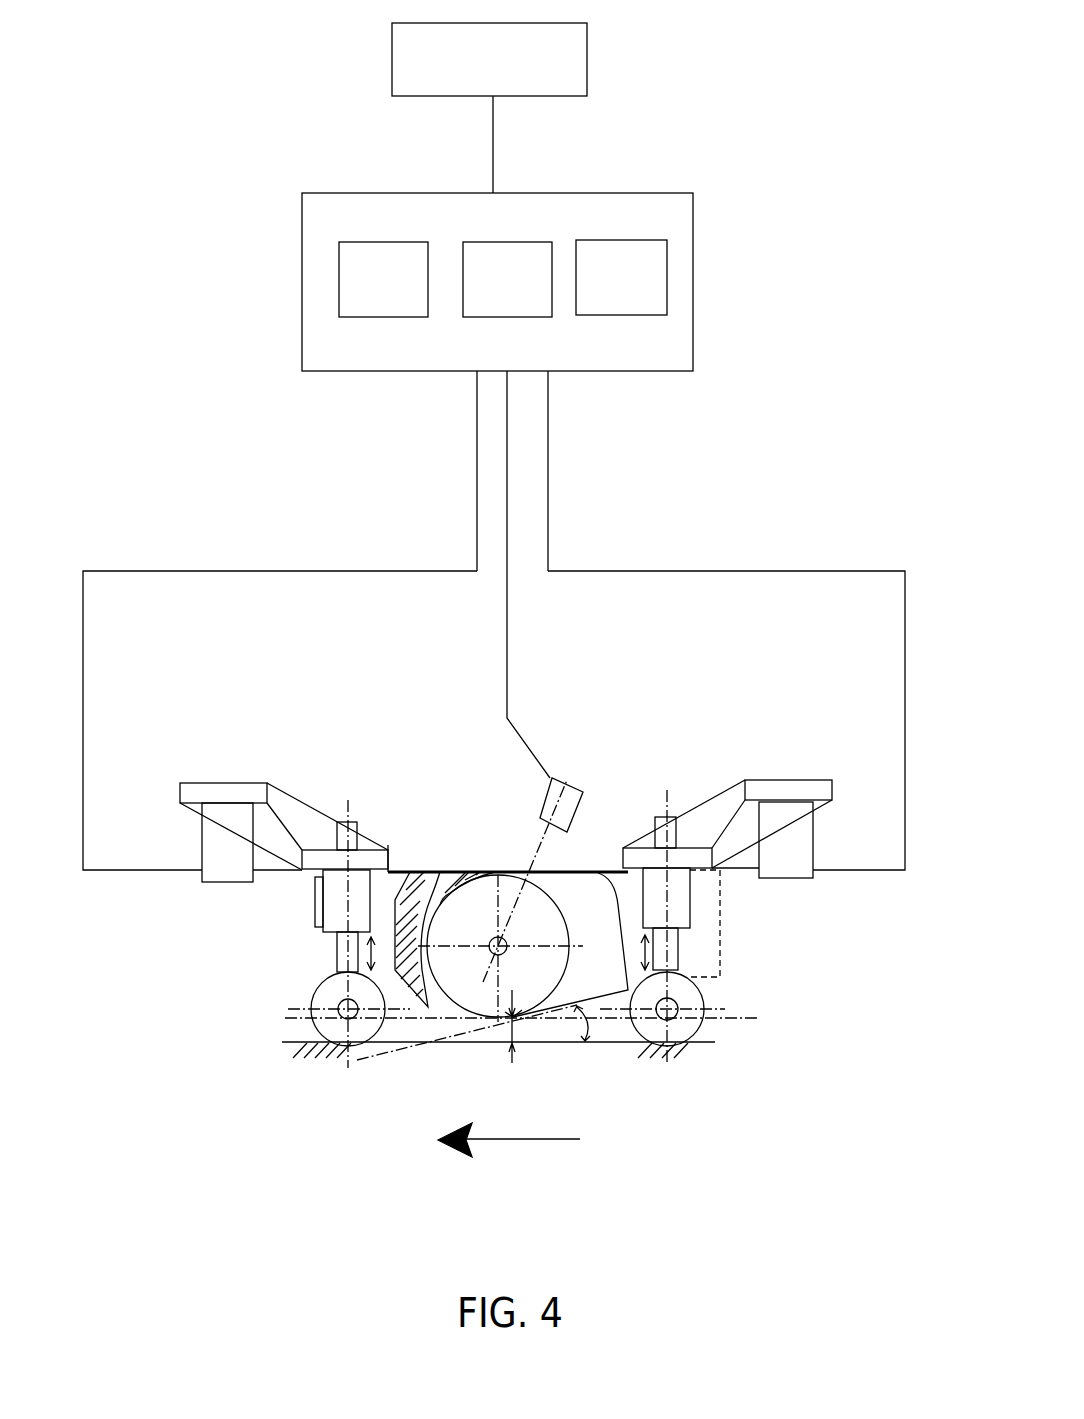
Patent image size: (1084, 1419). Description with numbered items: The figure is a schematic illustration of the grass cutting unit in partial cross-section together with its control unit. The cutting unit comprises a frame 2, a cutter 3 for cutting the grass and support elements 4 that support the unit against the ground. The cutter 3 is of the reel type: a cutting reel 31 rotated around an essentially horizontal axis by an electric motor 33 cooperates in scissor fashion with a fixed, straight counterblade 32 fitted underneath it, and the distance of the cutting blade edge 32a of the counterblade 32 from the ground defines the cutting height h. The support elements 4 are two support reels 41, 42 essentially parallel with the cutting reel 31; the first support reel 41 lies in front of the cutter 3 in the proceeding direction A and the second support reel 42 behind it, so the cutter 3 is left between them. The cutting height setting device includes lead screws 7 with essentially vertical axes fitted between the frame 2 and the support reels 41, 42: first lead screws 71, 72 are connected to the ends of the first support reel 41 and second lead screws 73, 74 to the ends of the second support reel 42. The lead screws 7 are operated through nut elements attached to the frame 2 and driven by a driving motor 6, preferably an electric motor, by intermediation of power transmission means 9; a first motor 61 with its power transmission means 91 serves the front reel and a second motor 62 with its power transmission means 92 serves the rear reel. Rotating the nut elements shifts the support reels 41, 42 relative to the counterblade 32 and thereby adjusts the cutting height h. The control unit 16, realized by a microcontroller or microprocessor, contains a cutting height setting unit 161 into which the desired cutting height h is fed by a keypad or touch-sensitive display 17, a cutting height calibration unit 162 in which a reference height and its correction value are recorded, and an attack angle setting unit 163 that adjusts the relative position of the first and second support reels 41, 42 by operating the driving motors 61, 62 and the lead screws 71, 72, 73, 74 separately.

The touch-sensitive display 17 is at (392, 55).
The control unit 16 is at (302, 232).
The cutting height setting unit 161 is at (403, 297).
The cutting height calibration unit 162 is at (529, 297).
The attack angle setting unit 163 is at (642, 296).
The power transmission means 9 is at (506, 791).
The first power transmission means 91 is at (304, 794).
The second power transmission means 92 is at (687, 783).
The driving motor 6 is at (504, 842).
The first driving motor 61 is at (213, 850).
The second driving motor 62 is at (792, 848).
The lead screws 7 is at (536, 904).
The first lead screw 71 is at (337, 942).
The first lead screw 72 is at (356, 952).
The second lead screw 73 is at (673, 960).
The second lead screw 74 is at (659, 949).
The support elements 4 is at (510, 1016).
The first support reel 41 is at (327, 996).
The second support reel 42 is at (687, 1027).
The frame 2 is at (393, 900).
The cutter 3 is at (466, 822).
The cutting reel 31 is at (436, 893).
The counterblade 32 is at (543, 1008).
The cutting blade edge 32a is at (513, 1008).
The electric motor 33 is at (547, 803).
The cutting height h is at (512, 1030).
The proceeding direction A is at (509, 1129).